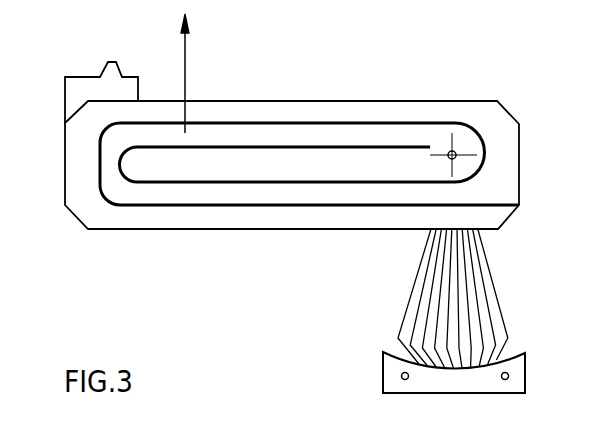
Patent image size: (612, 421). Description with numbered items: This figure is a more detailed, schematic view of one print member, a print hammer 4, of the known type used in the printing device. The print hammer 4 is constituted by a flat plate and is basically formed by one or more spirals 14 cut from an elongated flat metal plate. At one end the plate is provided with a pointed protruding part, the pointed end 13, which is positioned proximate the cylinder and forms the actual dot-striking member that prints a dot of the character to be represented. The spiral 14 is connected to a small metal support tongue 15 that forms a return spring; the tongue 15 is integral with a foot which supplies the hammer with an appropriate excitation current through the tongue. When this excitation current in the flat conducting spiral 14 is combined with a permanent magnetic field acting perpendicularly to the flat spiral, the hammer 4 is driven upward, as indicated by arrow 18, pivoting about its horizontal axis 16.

The print hammer 4 is at (297, 101).
The pointed end 13 is at (107, 62).
The spiral 14 is at (306, 216).
The support tongue 15 is at (416, 283).
The horizontal axis 16 is at (456, 157).
The arrow 18 is at (185, 58).